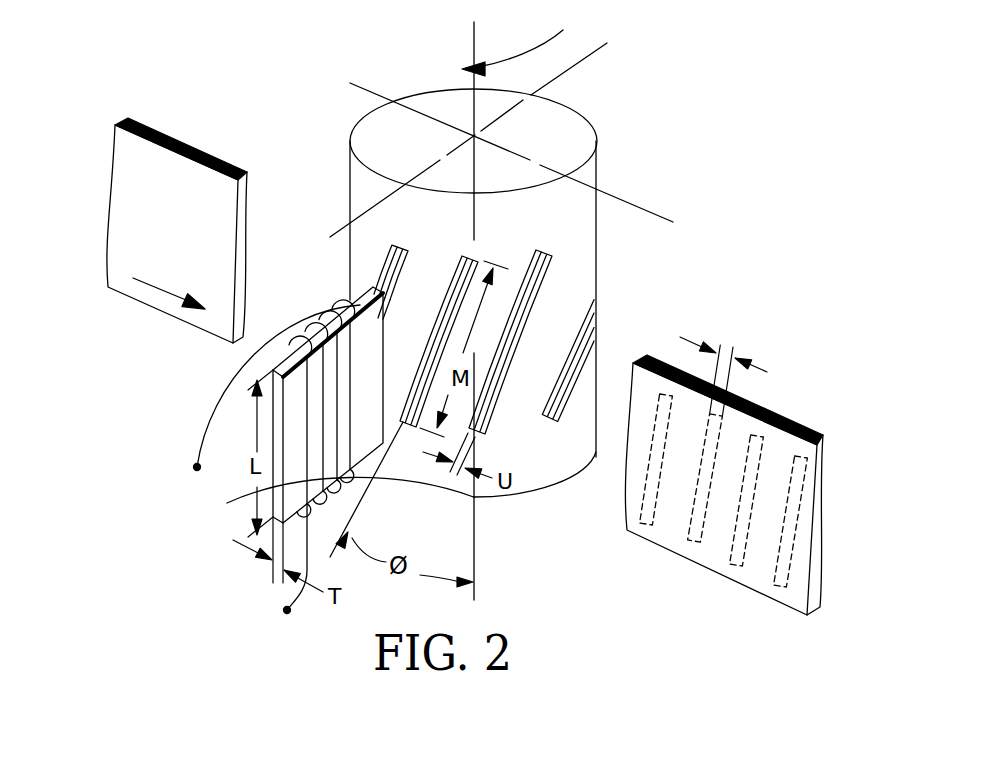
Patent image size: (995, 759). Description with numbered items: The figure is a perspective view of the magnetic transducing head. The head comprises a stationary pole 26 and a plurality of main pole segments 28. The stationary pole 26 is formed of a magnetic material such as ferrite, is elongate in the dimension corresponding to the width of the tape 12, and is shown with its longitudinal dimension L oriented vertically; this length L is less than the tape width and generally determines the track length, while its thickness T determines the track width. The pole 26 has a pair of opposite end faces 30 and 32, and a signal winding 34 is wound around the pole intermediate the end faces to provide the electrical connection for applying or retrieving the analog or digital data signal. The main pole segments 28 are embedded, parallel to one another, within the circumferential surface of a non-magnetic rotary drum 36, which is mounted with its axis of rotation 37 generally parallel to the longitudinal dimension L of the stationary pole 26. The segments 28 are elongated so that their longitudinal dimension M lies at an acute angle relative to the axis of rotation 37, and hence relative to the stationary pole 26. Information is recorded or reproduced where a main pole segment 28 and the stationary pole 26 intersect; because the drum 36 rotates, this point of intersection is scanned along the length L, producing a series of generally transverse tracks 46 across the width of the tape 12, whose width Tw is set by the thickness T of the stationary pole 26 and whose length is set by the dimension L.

The tape 12 is at (162, 313).
The stationary pole 26 is at (229, 503).
The main pole segments 28 is at (483, 250).
The end face 30 is at (398, 426).
The end face 32 is at (280, 397).
The signal winding 34 is at (337, 342).
The rotary drum 36 is at (578, 110).
The axis of rotation 37 is at (477, 541).
The transverse tracks 46 is at (737, 548).